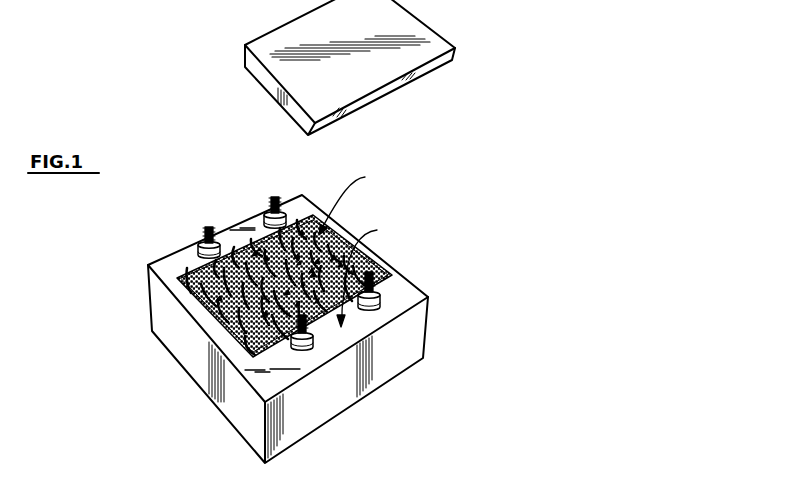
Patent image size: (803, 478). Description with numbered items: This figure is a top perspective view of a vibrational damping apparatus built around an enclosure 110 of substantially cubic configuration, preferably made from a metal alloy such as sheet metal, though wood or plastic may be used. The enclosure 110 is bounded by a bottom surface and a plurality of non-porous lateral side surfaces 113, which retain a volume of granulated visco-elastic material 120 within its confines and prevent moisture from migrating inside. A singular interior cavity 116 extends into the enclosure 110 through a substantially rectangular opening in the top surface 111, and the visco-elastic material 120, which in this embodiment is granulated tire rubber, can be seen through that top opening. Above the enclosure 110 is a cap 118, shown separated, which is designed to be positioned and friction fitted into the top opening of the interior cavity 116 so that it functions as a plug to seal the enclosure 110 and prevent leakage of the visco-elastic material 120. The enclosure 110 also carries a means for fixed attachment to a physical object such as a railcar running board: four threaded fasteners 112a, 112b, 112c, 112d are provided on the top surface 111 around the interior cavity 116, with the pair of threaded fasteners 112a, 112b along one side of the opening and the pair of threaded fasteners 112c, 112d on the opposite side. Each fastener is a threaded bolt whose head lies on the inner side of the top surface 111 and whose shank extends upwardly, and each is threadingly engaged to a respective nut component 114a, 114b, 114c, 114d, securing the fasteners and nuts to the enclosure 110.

The enclosure 110 is at (408, 337).
The top surface 111 is at (374, 274).
The threaded fastener 112a is at (208, 226).
The threaded fastener 112b is at (276, 197).
The threaded fastener 112c is at (293, 349).
The threaded fastener 112d is at (370, 273).
The lateral side surfaces 113 is at (202, 366).
The nut component 114a is at (198, 249).
The nut component 114b is at (265, 215).
The nut component 114c is at (312, 350).
The nut component 114d is at (380, 305).
The interior cavity 116 is at (360, 201).
The cap 118 is at (382, 95).
The granulated visco-elastic material 120 is at (175, 288).